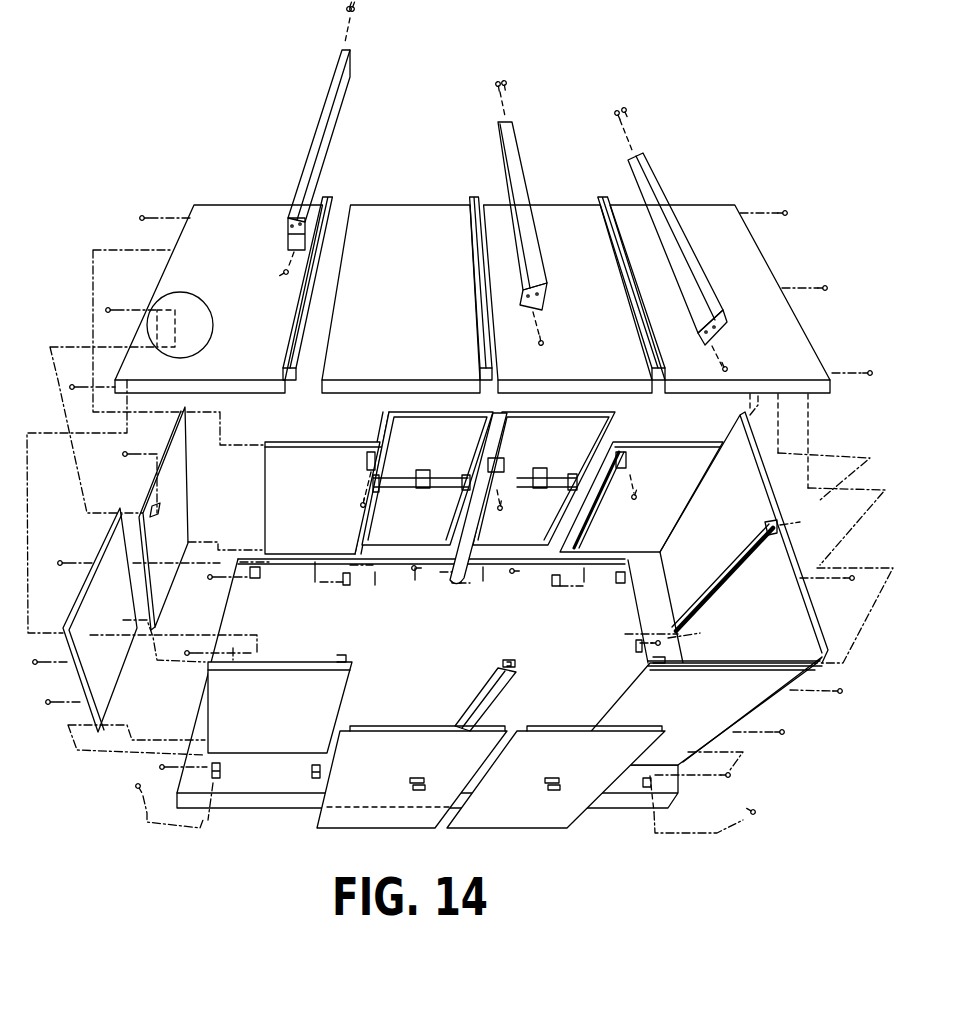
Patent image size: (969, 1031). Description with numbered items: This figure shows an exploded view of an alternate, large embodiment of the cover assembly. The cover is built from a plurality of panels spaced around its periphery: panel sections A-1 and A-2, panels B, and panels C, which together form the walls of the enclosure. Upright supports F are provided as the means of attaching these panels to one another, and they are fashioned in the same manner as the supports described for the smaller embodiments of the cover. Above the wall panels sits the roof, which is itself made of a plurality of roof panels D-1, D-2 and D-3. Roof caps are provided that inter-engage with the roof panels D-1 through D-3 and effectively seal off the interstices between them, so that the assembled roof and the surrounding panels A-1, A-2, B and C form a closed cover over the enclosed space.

The roof panel D-1 is at (472, 197).
The roof panel D-2 is at (434, 236).
The roof panel D-3 is at (606, 250).
The panel A-1 is at (442, 620).
The panel A-2 is at (483, 535).
The panel B is at (515, 637).
The panel C is at (491, 620).
The upright support F is at (483, 572).